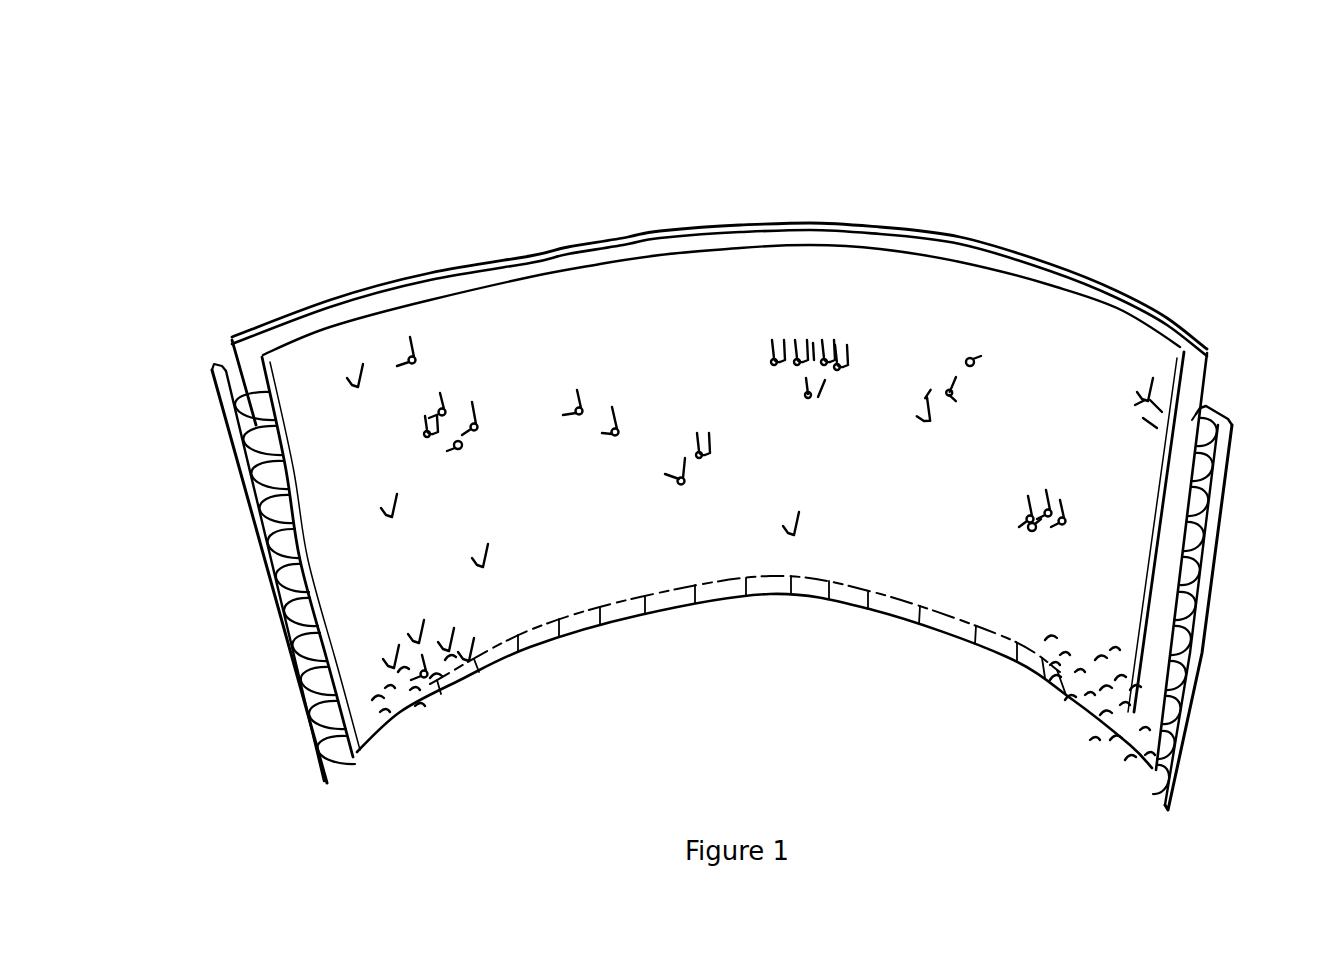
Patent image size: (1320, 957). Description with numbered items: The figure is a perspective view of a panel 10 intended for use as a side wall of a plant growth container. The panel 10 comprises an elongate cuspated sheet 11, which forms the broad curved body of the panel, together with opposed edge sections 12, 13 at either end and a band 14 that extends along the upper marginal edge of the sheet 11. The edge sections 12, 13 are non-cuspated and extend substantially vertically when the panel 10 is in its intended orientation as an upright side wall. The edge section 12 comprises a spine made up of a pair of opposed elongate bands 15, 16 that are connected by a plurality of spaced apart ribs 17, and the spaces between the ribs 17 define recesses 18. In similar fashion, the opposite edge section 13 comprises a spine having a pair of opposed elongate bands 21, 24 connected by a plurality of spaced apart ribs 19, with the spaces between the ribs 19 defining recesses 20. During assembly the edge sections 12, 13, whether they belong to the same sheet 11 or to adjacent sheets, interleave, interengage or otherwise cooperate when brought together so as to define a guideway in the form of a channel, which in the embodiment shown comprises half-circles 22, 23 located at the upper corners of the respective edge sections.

The panel 10 is at (1022, 210).
The elongate cuspated sheet 11 is at (535, 592).
The edge section 12 is at (310, 730).
The edge section 13 is at (1223, 492).
The band 14 is at (510, 273).
The elongate band 15 is at (252, 510).
The elongate band 16 is at (280, 468).
The ribs 17 is at (287, 585).
The recesses 18 is at (313, 670).
The ribs 19 is at (1178, 646).
The recesses 20 is at (1176, 738).
The elongate band 21 is at (1217, 537).
The half-circle 22 is at (216, 350).
The half-circle 23 is at (1216, 402).
The elongate band 24 is at (1165, 573).